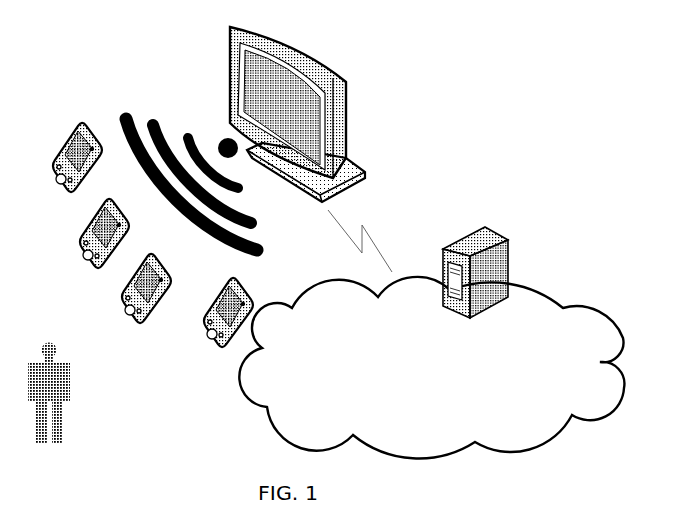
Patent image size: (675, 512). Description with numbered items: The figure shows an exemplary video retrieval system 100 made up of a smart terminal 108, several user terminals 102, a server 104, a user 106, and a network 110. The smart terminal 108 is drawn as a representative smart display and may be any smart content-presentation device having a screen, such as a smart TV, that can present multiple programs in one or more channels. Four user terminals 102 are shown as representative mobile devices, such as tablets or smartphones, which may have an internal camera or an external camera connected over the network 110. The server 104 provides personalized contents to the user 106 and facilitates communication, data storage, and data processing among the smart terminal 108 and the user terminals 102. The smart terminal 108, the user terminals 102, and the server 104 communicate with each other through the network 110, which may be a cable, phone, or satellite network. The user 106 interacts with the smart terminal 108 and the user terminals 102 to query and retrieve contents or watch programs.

The video retrieval system 100 is at (87, 74).
The user terminal 102 is at (163, 305).
The server 104 is at (508, 275).
The user 106 is at (62, 436).
The smart terminal 108 is at (346, 96).
The network 110 is at (322, 354).